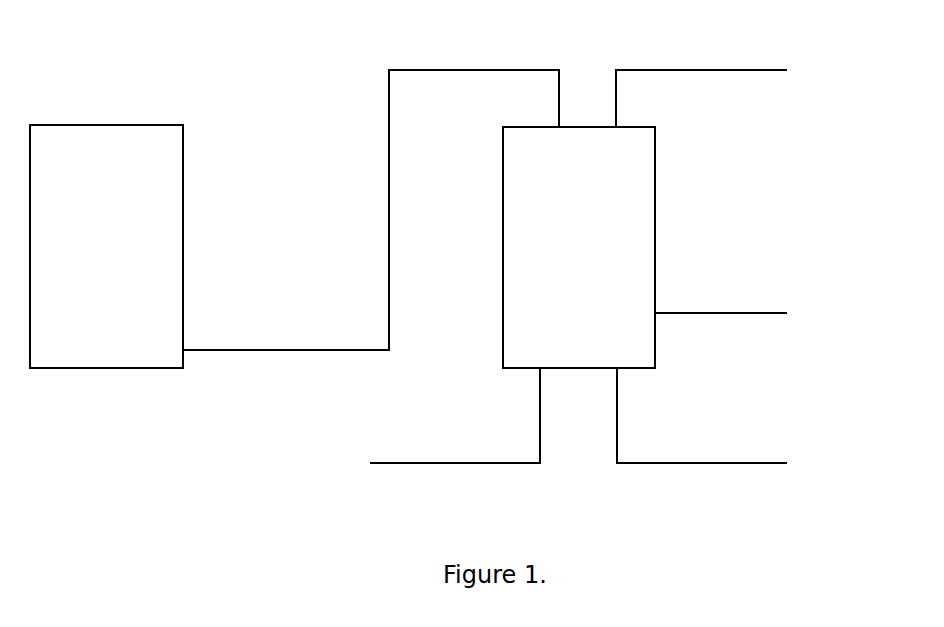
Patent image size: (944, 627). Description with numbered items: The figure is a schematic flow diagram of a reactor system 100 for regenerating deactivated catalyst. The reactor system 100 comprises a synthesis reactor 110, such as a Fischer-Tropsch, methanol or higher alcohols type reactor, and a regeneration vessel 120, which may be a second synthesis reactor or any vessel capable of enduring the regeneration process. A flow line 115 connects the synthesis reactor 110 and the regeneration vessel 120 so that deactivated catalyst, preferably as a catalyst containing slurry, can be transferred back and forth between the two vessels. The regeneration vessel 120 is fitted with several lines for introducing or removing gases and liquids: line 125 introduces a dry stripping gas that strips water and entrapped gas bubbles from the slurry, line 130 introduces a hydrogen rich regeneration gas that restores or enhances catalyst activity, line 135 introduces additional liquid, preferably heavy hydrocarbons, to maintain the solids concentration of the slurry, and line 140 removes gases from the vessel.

The reactor system 100 is at (828, 162).
The synthesis reactor 110 is at (112, 124).
The flow line 115 is at (266, 350).
The regeneration vessel 120 is at (655, 218).
The line for introducing a stripping gas 125 is at (398, 463).
The line for introducing a regeneration gas 130 is at (697, 463).
The line for introducing an additional liquid 135 is at (715, 313).
The line for removing gases 140 is at (703, 70).